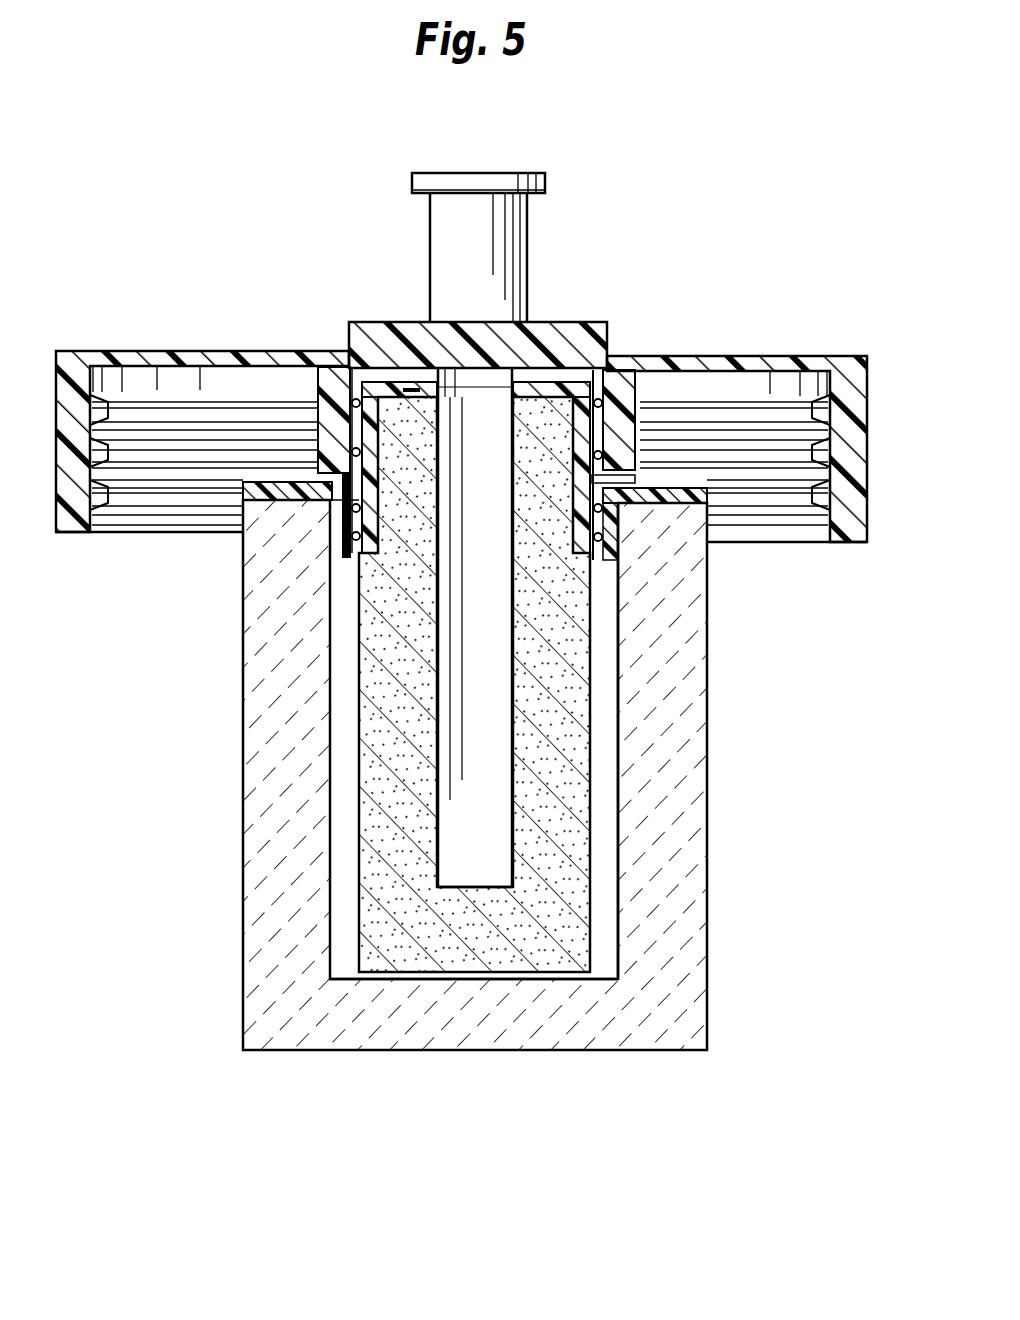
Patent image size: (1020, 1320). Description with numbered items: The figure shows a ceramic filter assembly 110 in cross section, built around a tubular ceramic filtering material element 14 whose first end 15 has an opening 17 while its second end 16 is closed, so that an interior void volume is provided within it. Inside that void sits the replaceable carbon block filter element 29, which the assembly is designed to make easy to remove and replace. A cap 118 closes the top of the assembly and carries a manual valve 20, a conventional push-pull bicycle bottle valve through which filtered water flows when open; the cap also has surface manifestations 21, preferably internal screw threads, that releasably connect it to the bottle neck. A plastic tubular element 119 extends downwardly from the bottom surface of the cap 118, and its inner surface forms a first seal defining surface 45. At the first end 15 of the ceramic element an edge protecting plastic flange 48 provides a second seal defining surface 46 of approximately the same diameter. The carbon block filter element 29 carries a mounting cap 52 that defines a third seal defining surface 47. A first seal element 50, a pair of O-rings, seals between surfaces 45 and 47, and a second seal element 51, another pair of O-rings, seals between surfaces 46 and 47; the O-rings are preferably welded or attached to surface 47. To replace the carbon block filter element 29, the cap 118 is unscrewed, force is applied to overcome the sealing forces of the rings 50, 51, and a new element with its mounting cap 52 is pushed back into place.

The ceramic filter assembly 110 is at (868, 312).
The cap 118 is at (707, 360).
The plastic tubular element 119 is at (325, 378).
The manual valve 20 is at (445, 228).
The mounting cap 52 is at (413, 389).
The first seal element 50 is at (350, 347).
The first seal defining surface 45 is at (615, 420).
The third seal defining surface 47 is at (595, 481).
The edge protecting plastic flange 48 is at (284, 490).
The second seal element 51 is at (350, 504).
The second seal defining surface 46 is at (342, 516).
The surface manifestations 21 is at (113, 518).
The ceramic filtering material element 14 is at (299, 714).
The first end 15 is at (658, 502).
The opening 17 is at (605, 690).
The carbon block filter element 29 is at (548, 793).
The second end 16 is at (465, 1012).